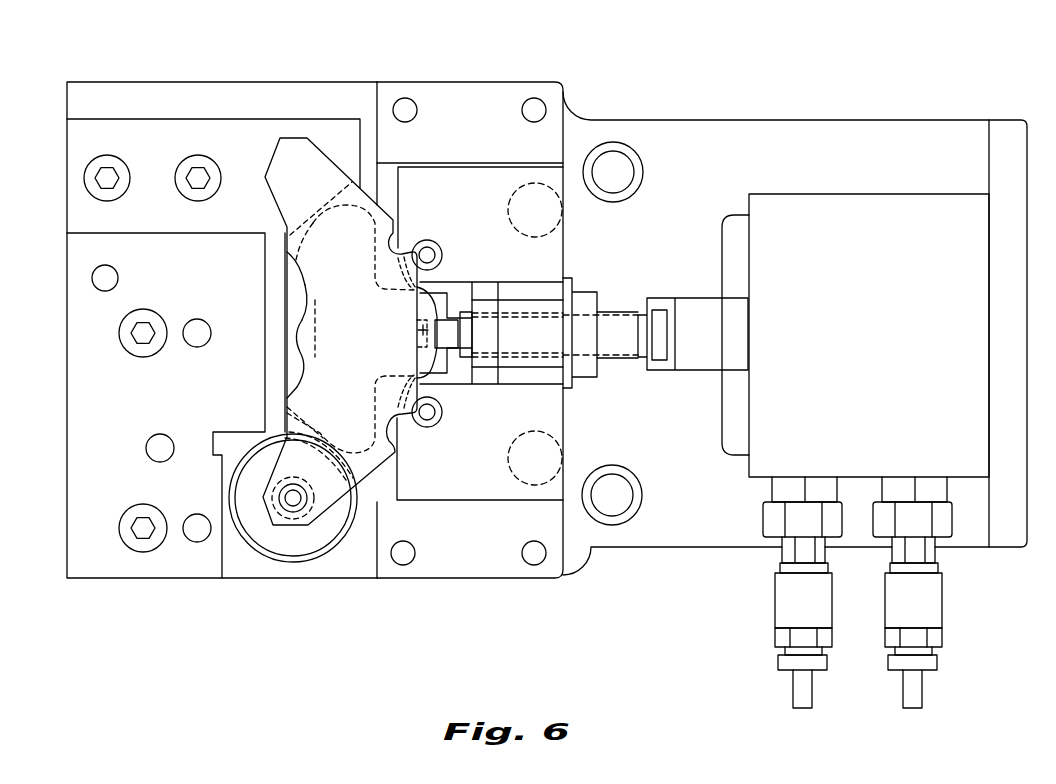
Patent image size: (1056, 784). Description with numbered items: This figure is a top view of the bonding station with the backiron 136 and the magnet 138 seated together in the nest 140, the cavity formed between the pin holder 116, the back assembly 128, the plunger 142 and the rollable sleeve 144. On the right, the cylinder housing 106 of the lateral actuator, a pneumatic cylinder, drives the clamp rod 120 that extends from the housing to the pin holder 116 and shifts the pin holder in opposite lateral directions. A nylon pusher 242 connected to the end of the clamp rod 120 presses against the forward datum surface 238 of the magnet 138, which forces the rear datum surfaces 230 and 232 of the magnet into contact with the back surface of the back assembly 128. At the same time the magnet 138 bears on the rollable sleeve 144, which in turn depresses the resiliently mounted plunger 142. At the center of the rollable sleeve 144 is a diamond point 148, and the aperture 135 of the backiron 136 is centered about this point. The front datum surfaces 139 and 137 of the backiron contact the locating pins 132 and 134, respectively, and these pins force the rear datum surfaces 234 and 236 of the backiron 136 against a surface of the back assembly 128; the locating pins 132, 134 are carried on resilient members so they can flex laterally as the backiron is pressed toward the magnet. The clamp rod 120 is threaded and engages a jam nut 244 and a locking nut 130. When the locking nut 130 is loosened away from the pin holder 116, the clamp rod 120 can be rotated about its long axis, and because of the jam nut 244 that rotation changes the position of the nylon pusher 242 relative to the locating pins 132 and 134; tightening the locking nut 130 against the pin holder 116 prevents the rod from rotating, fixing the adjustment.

The cylinder housing 106 is at (877, 296).
The pin holder 116 is at (452, 190).
The clamp rod 120 is at (622, 325).
The back assembly 128 is at (124, 492).
The locking nut 130 is at (583, 298).
The locating pin 132 is at (427, 252).
The locating pin 134 is at (427, 414).
The aperture 135 is at (278, 507).
The backiron 136 is at (289, 155).
The front datum surface 137 is at (420, 428).
The magnet 138 is at (337, 353).
The front datum surface 139 is at (423, 273).
The nest 140 is at (367, 182).
The plunger 142 is at (318, 207).
The rollable sleeve 144 is at (333, 543).
The diamond point 148 is at (293, 513).
The rear datum surface 230 is at (290, 253).
The rear datum surface 232 is at (285, 398).
The rear datum surface 234 is at (300, 280).
The rear datum surface 236 is at (287, 398).
The forward datum surface 238 is at (413, 300).
The nylon pusher 242 is at (420, 333).
The jam nut 244 is at (485, 375).